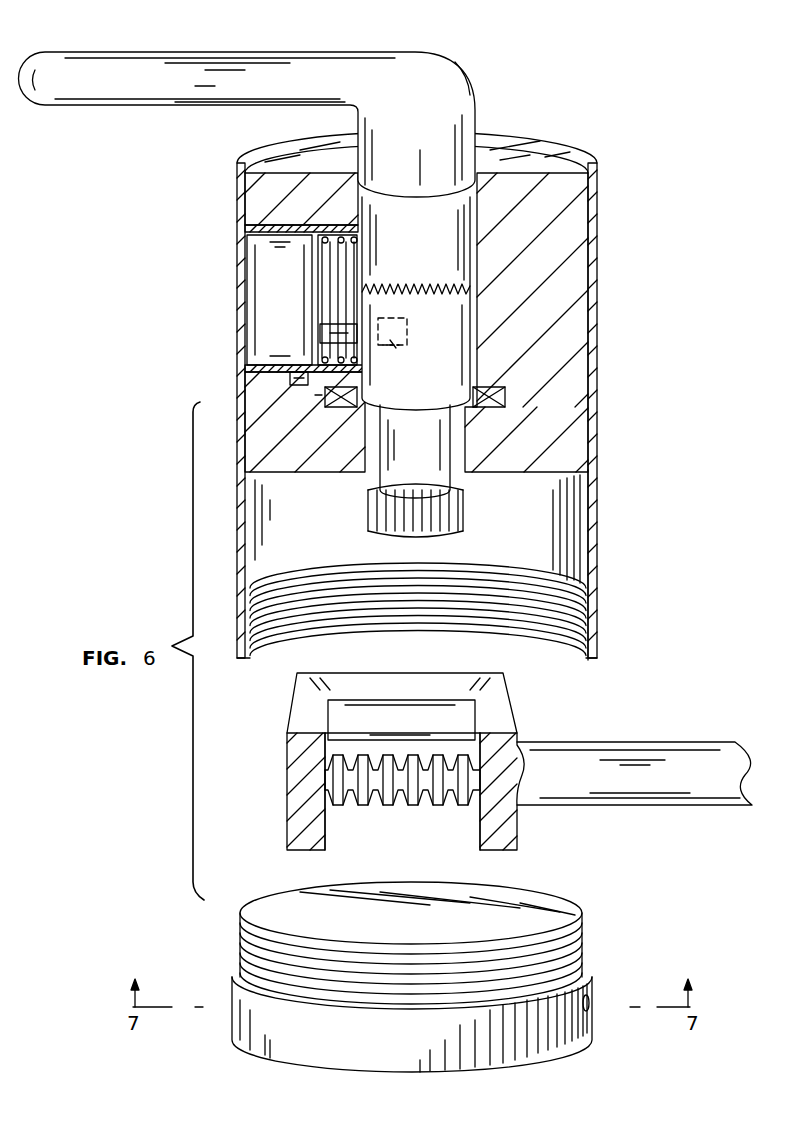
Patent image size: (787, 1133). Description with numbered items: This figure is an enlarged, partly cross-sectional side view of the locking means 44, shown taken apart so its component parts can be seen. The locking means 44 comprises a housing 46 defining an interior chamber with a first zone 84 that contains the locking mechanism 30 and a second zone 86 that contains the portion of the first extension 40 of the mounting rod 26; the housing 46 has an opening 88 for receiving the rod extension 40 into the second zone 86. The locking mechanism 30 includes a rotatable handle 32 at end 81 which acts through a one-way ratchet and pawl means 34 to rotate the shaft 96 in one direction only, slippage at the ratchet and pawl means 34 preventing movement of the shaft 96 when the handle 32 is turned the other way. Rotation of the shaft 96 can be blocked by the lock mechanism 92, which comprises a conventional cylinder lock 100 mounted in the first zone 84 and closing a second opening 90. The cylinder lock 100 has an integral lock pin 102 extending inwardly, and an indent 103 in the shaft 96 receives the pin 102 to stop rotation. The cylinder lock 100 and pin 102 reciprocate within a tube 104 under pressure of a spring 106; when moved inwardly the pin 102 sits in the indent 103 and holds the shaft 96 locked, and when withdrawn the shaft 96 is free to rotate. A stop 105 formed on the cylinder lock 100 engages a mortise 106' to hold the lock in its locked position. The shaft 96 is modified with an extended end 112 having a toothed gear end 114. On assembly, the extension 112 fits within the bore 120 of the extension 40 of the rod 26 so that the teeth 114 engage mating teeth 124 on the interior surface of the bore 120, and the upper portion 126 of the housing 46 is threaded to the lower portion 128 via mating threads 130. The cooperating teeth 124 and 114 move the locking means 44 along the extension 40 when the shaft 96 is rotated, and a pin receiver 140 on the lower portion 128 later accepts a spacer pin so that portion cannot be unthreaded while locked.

The mounting rod 26 is at (627, 755).
The locking mechanism 30 is at (502, 315).
The rotatable handle 32 is at (348, 72).
The one-way ratchet and pawl means 34 is at (408, 328).
The first extension 40 is at (500, 710).
The locking means 44 is at (389, 545).
The housing 46 is at (243, 368).
The end 81 is at (510, 152).
The first zone 84 is at (548, 478).
The second zone 86 is at (537, 534).
The opening 88 is at (602, 558).
The second opening 90 is at (168, 277).
The lock mechanism 92 is at (232, 266).
The shaft 96 is at (486, 367).
The cylinder lock 100 is at (252, 255).
The lock pin 102 is at (322, 336).
The indent 103 is at (400, 353).
The tube 104 is at (262, 213).
The stop 105 is at (298, 388).
The spring 106 is at (380, 295).
The mortise 106' is at (297, 433).
The extended end 112 is at (390, 441).
The toothed gear end 114 is at (368, 505).
The bore 120 is at (390, 716).
The mating teeth 124 is at (417, 807).
The upper portion 126 is at (599, 615).
The lower portion 128 is at (573, 1053).
The mating threads 130 is at (297, 598).
The pin receiver 140 is at (592, 1002).